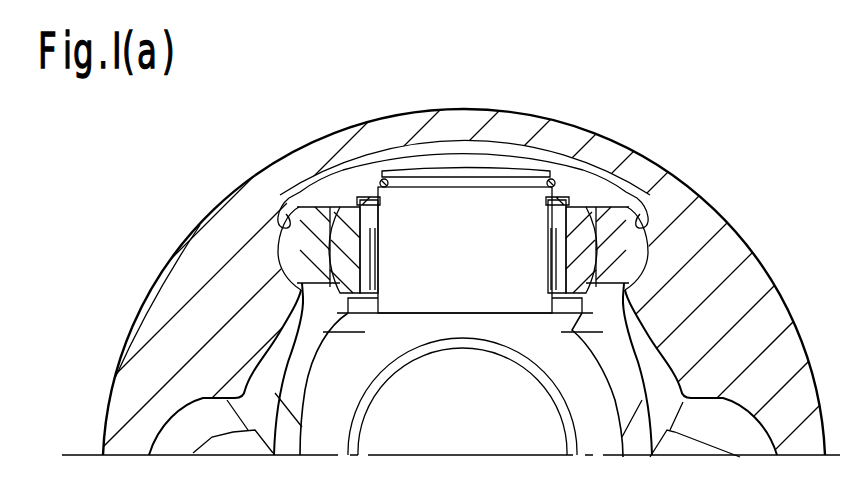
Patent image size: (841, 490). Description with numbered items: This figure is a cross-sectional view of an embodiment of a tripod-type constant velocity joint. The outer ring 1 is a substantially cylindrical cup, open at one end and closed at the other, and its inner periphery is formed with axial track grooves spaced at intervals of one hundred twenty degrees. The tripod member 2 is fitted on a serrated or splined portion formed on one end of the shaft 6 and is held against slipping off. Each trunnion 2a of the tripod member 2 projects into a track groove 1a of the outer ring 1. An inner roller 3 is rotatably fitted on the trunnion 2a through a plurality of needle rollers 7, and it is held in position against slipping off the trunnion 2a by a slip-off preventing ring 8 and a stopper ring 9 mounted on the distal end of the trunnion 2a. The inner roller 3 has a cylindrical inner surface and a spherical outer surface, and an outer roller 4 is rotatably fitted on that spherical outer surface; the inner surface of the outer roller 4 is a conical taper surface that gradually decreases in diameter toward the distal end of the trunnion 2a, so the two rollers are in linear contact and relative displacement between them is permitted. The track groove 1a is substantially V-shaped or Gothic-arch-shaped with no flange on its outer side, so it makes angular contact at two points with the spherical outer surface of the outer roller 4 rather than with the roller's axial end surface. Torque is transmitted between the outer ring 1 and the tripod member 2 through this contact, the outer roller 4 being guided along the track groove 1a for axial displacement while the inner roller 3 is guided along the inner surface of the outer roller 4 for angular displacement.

The outer ring 1 is at (176, 247).
The track groove 1a is at (282, 252).
The tripod member 2 is at (278, 364).
The trunnion 2a is at (433, 205).
The inner roller 3 is at (305, 220).
The outer roller 4 is at (300, 220).
The shaft 6 is at (448, 431).
The needle rollers 7 is at (370, 267).
The slip-off preventing ring 8 is at (333, 212).
The stopper ring 9 is at (383, 181).